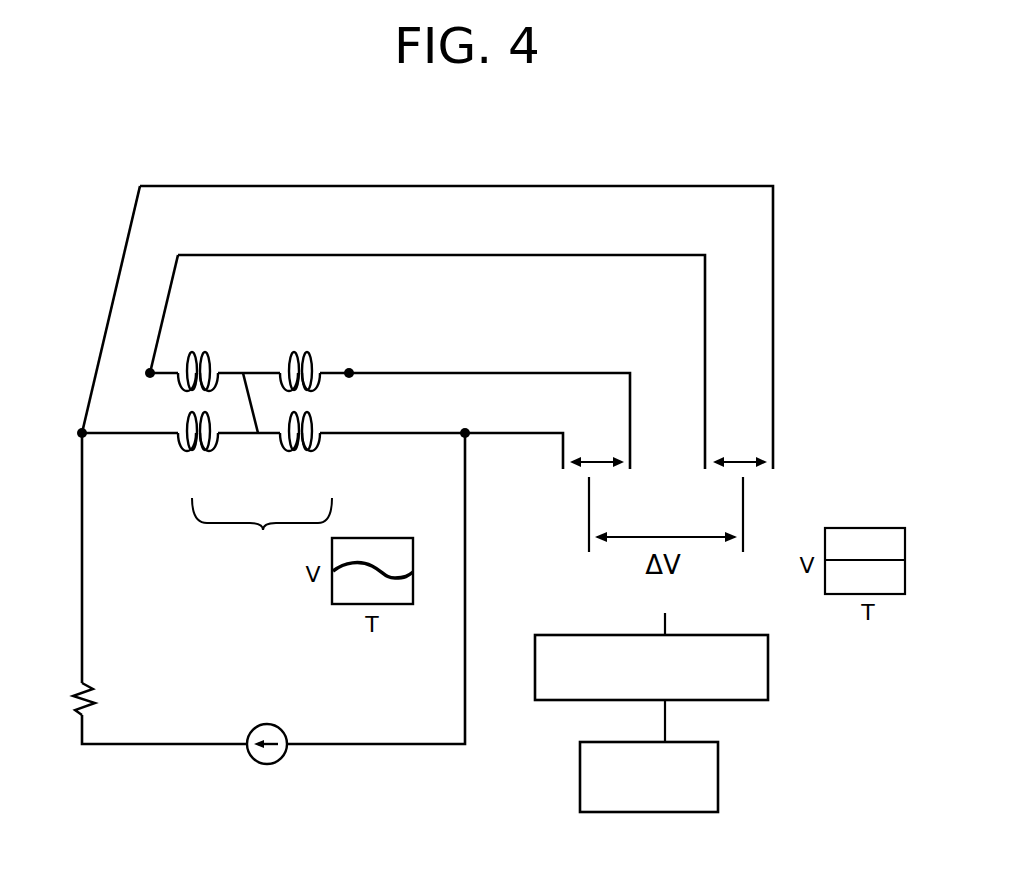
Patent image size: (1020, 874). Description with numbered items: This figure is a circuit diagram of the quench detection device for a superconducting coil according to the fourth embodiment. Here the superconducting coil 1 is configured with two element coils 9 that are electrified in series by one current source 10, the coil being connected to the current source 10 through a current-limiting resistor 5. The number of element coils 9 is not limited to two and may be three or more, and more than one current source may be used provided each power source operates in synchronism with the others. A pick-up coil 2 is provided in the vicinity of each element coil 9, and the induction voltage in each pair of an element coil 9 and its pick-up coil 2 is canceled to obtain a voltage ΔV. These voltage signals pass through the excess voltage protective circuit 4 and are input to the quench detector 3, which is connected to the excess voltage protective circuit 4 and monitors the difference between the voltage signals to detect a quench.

The superconducting coil 1 is at (263, 530).
The pick-up coil 2 is at (210, 352).
The quench detector 3 is at (718, 778).
The excess voltage protective circuit 4 is at (768, 668).
The current-limiting resistor 5 is at (70, 712).
The element coils 9 is at (198, 453).
The current source 10 is at (270, 764).